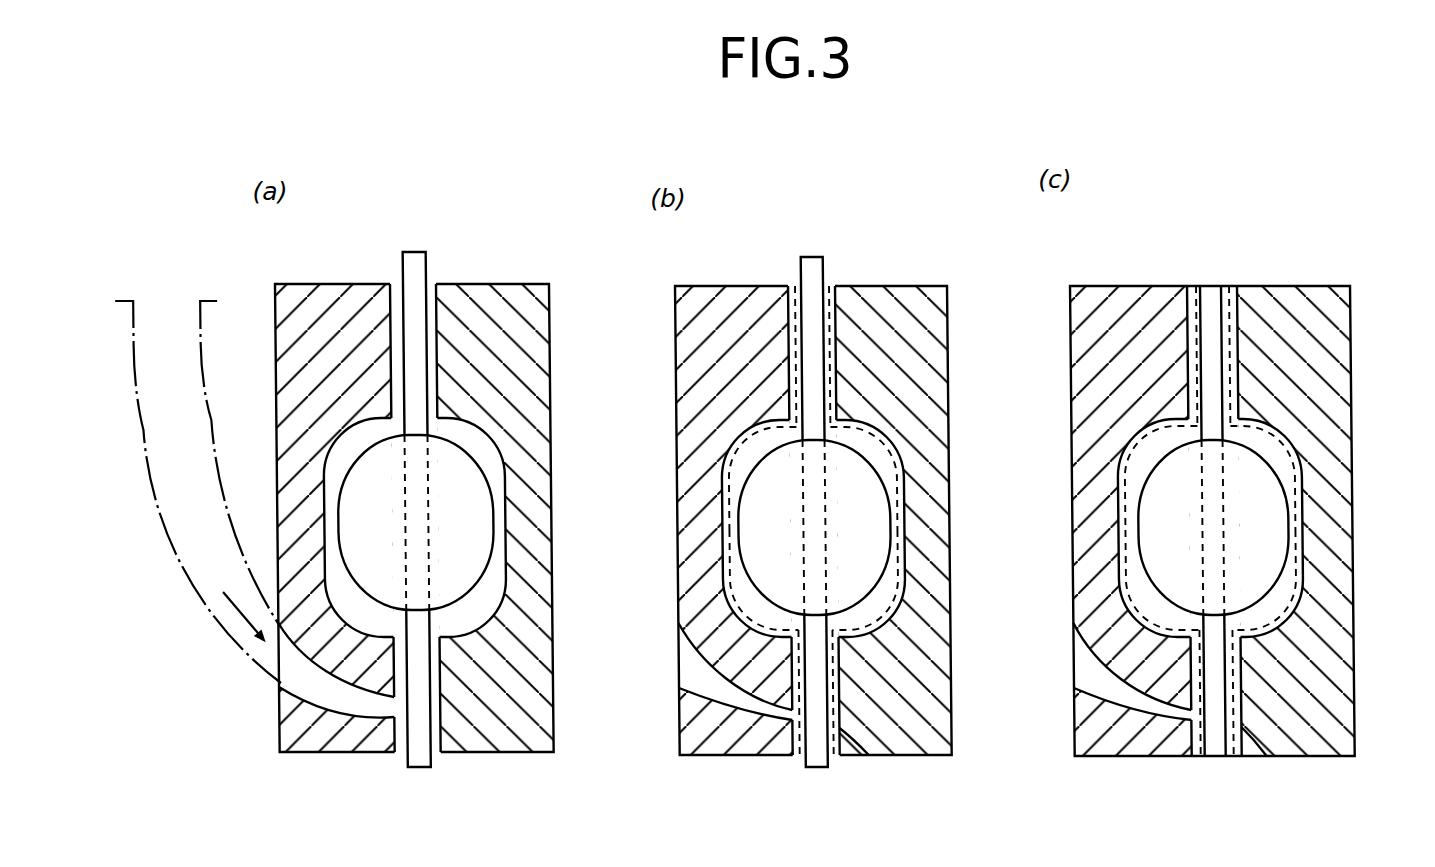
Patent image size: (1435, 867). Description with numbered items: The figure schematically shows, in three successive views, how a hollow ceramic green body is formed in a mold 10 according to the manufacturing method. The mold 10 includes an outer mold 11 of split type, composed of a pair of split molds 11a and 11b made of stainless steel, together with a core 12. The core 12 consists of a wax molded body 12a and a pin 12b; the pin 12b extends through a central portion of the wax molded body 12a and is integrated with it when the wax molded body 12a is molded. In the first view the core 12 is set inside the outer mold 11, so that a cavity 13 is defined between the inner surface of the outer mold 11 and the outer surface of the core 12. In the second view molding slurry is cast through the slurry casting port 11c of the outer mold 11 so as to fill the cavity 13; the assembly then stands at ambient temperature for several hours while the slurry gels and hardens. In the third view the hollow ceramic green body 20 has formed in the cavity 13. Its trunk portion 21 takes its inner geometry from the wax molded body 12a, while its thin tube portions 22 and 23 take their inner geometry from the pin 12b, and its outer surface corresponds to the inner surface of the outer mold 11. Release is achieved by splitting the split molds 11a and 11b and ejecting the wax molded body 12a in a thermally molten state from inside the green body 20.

The mold 10 is at (546, 765).
The outer mold 11 is at (553, 289).
The split mold 11a is at (300, 374).
The split mold 11b is at (520, 694).
The casting port 11c is at (330, 700).
The core 12 is at (393, 286).
The wax molded body 12a is at (465, 582).
The pin 12b is at (419, 768).
The cavity 13 is at (432, 392).
The hollow ceramic green body 20 is at (910, 520).
The trunk portion 21 is at (890, 610).
The thin tube portion 22 is at (863, 745).
The thin tube portion 23 is at (790, 310).